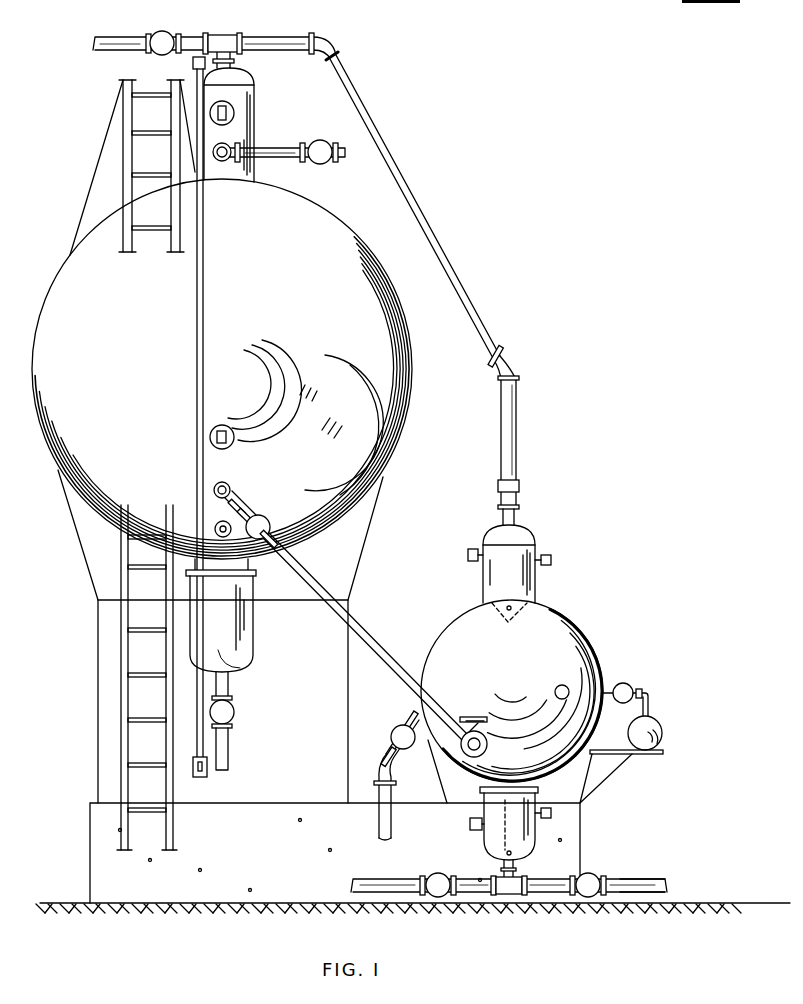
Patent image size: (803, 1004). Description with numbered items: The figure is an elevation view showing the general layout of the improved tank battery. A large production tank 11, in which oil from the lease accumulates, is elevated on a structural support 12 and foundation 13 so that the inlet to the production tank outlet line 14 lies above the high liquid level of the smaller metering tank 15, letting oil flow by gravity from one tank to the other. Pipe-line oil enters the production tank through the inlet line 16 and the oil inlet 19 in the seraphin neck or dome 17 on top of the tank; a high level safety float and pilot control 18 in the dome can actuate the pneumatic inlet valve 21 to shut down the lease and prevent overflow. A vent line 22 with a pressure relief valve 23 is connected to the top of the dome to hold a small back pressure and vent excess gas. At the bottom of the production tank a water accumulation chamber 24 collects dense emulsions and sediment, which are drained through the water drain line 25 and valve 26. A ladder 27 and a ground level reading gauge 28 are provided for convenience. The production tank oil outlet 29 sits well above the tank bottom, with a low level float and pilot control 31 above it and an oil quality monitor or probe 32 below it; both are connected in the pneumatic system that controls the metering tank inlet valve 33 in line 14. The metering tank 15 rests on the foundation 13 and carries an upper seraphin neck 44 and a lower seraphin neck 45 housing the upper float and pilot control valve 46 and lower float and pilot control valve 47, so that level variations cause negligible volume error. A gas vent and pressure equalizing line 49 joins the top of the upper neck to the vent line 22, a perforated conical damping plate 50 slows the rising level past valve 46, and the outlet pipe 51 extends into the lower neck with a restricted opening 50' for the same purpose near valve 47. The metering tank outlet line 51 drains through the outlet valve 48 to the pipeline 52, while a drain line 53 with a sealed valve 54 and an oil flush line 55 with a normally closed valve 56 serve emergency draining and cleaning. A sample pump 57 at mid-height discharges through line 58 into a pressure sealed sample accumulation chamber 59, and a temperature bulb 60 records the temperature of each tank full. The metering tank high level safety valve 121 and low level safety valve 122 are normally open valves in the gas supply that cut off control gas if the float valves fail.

The production tank 11 is at (375, 252).
The structural support 12 is at (97, 680).
The foundation 13 is at (89, 865).
The production tank outlet line 14 is at (356, 612).
The metering tank 15 is at (455, 618).
The inlet line 16 is at (268, 158).
The seraphin neck or dome 17 is at (257, 130).
The high level safety float and pilot control 18 is at (233, 110).
The oil inlet 19 is at (224, 160).
The pneumatic inlet valve 21 is at (322, 165).
The vent line 22 is at (234, 60).
The pressure relief valve 23 is at (165, 33).
The water accumulation chamber 24 is at (255, 628).
The water drain line 25 is at (229, 756).
The valve 26 is at (235, 712).
The ladder 27 is at (76, 238).
The ground level reading gauge 28 is at (195, 778).
The production tank oil outlet 29 is at (229, 486).
The low level float and pilot control 31 is at (233, 432).
The oil quality monitor or probe 32 is at (215, 524).
The metering tank inlet valve 33 is at (474, 730).
The upper seraphin neck 44 is at (537, 535).
The lower seraphin neck 45 is at (537, 792).
The upper float and pilot control valve 46 is at (552, 563).
The lower float and pilot control valve 47 is at (552, 816).
The outlet valve 48 is at (600, 877).
The gas vent and pressure equalizing line 49 is at (518, 470).
The damping plate 50 is at (534, 602).
The restricted opening 50' is at (459, 839).
The metering tank outlet line 51 is at (515, 868).
The pipeline 52 is at (645, 877).
The drain line 53 is at (382, 895).
The valve 54 is at (445, 898).
The oil flush line 55 is at (375, 766).
The valve 56 is at (392, 731).
The sample pump 57 is at (632, 686).
The line 58 is at (650, 707).
The sample accumulation chamber 59 is at (662, 735).
The temperature bulb 60 is at (558, 686).
The metering tank high level safety valve 121 is at (466, 551).
The metering tank low level safety valve 122 is at (468, 824).